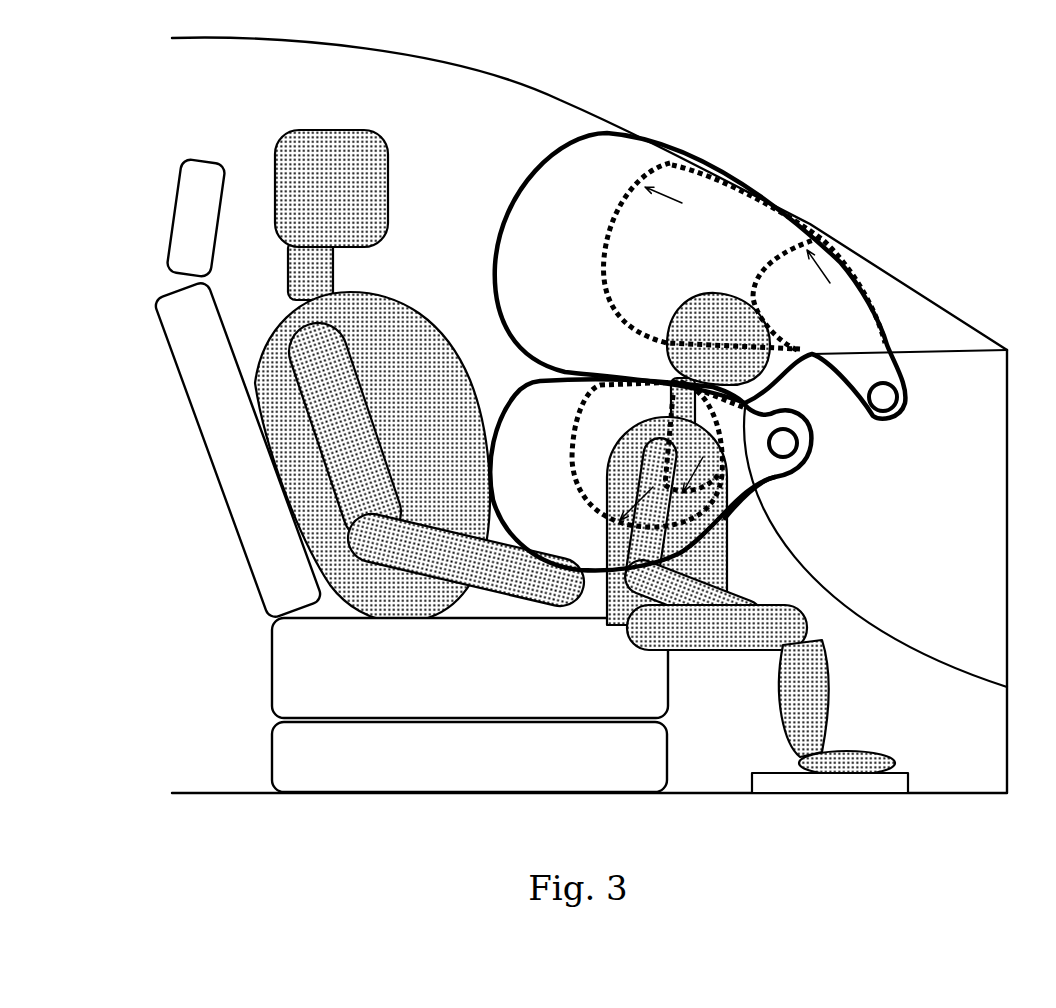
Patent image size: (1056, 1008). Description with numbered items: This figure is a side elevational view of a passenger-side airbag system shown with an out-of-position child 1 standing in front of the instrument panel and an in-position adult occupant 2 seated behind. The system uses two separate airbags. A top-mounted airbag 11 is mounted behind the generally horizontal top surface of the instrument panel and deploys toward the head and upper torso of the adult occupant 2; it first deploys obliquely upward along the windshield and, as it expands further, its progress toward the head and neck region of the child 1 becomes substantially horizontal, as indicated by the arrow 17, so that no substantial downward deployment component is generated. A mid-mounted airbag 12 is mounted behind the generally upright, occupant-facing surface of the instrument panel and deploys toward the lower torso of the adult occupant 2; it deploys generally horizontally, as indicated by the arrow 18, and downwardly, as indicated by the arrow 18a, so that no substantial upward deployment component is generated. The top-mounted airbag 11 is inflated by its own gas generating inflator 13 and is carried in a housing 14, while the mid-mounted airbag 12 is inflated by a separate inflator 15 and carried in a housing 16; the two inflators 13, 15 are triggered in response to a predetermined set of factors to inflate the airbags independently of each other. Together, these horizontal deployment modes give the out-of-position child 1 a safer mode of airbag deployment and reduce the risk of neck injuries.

The out-of-position child 1 is at (690, 317).
The adult occupant 2 is at (360, 143).
The top-mounted airbag 11 is at (617, 133).
The mid-mounted airbag 12 is at (590, 572).
The inflator 13 is at (883, 400).
The housing 14 is at (907, 370).
The inflator 15 is at (785, 445).
The housing 16 is at (765, 473).
The arrow 17 is at (618, 274).
The arrow 18 is at (698, 433).
The arrow 18a is at (727, 557).